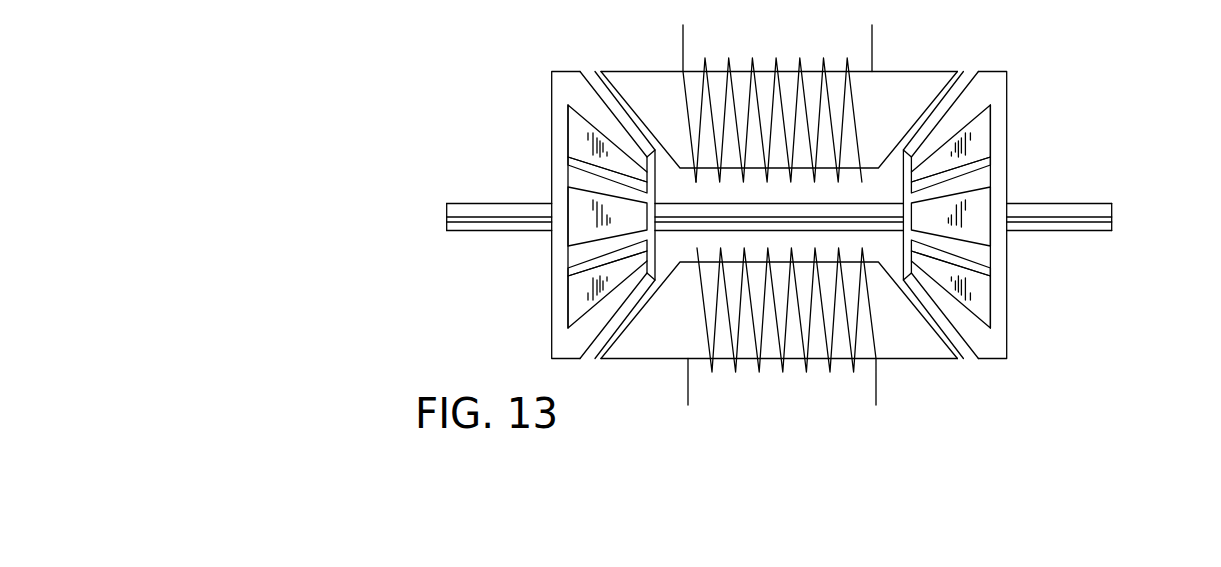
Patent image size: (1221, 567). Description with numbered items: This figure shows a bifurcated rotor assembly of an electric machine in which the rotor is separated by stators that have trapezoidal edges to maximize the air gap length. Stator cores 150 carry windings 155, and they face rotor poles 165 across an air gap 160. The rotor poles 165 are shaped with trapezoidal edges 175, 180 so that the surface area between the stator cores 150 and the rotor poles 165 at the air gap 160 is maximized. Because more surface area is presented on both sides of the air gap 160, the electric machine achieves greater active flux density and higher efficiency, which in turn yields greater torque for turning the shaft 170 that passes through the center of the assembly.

The stator core 150 is at (650, 98).
The winding 155 is at (780, 107).
The air gap 160 is at (966, 70).
The rotor pole 165 is at (1000, 143).
The shaft 170 is at (1053, 225).
The trapezoidal edge 175 is at (643, 319).
The trapezoidal edge 180 is at (613, 323).